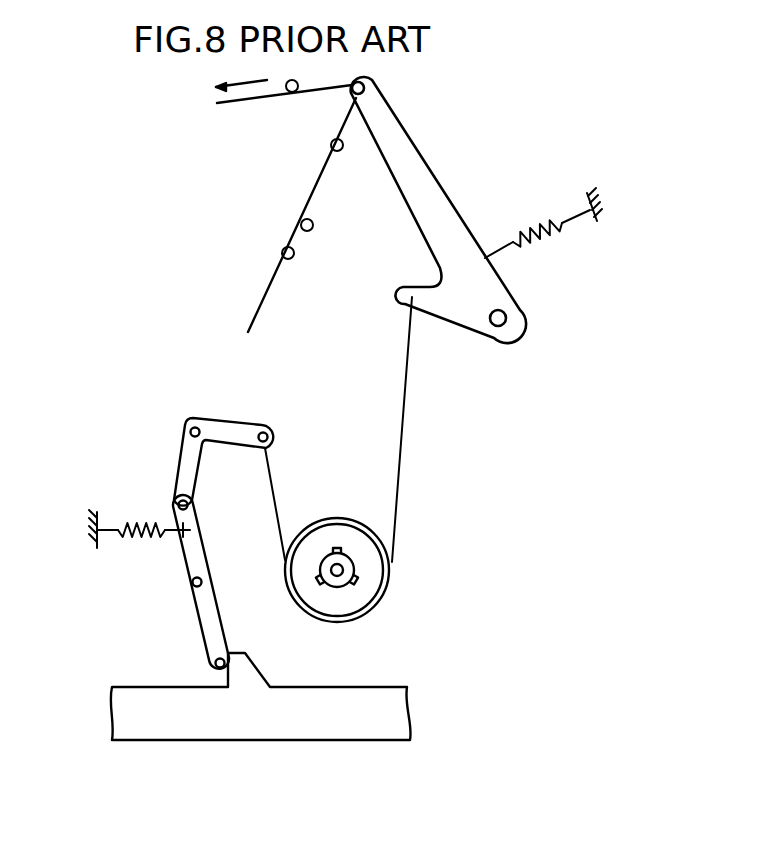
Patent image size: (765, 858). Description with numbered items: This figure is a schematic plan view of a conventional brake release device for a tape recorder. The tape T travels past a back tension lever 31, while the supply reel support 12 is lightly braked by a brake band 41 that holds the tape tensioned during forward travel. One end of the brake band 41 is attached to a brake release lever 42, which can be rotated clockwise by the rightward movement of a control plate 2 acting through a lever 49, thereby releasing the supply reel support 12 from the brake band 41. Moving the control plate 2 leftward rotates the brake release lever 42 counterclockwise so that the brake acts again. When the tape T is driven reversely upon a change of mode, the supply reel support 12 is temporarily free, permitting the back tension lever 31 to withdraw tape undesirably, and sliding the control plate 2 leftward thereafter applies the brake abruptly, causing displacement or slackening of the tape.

The tape T is at (248, 103).
The back tension lever 31 is at (423, 178).
The brake band 41 is at (395, 528).
The supply reel support 12 is at (357, 598).
The brake release lever 42 is at (227, 430).
The lever 49 is at (207, 617).
The control plate 2 is at (328, 727).